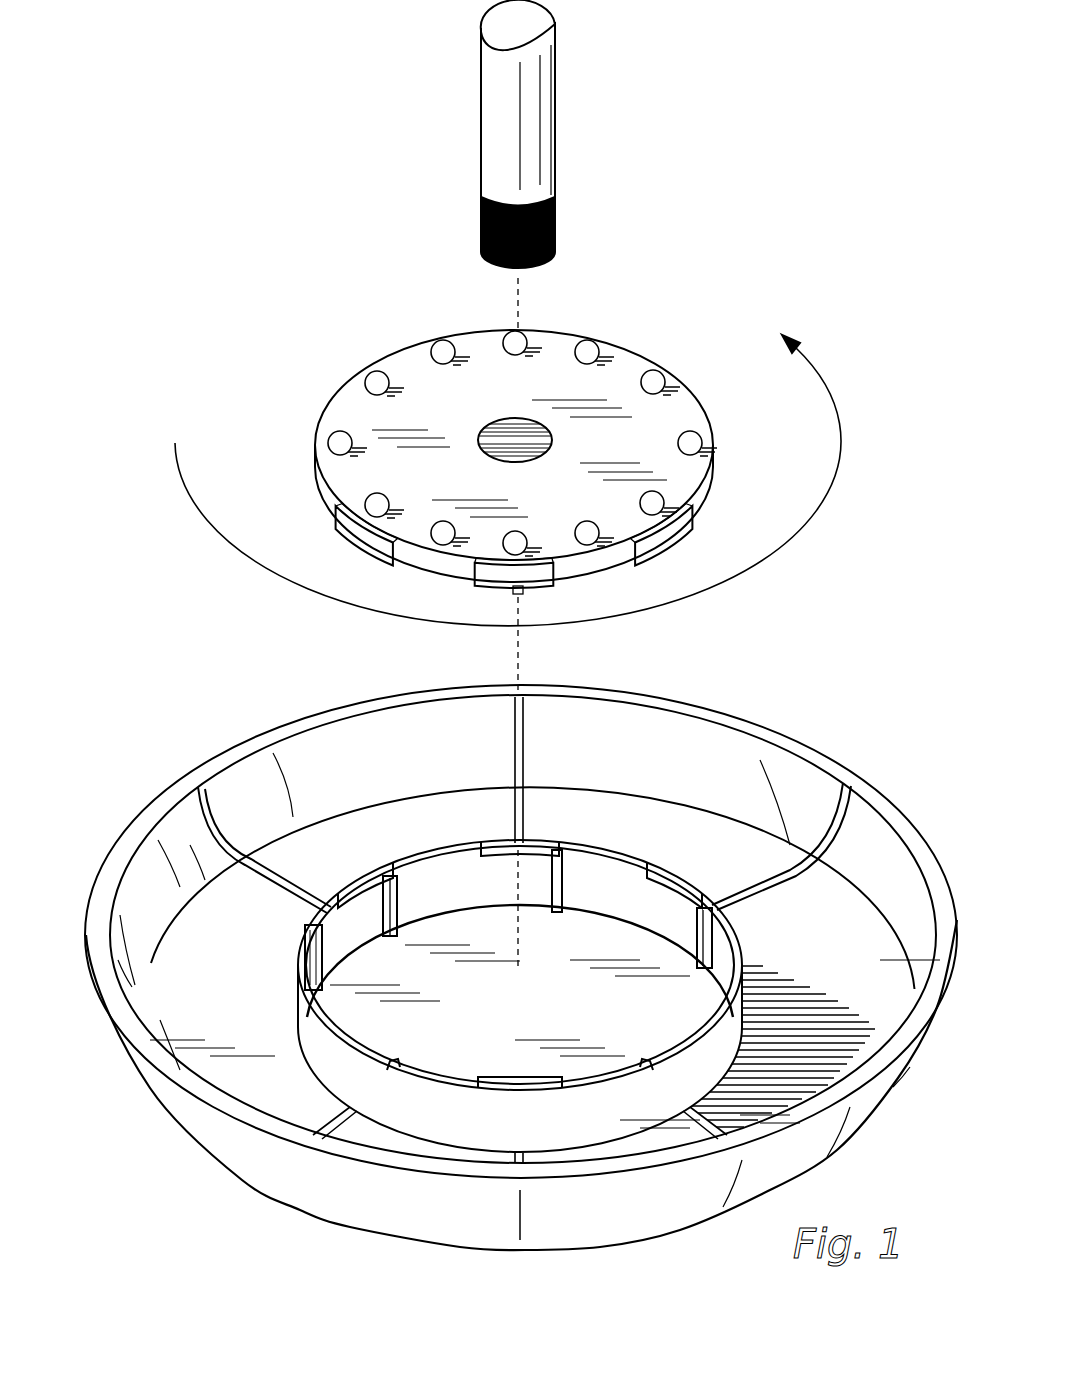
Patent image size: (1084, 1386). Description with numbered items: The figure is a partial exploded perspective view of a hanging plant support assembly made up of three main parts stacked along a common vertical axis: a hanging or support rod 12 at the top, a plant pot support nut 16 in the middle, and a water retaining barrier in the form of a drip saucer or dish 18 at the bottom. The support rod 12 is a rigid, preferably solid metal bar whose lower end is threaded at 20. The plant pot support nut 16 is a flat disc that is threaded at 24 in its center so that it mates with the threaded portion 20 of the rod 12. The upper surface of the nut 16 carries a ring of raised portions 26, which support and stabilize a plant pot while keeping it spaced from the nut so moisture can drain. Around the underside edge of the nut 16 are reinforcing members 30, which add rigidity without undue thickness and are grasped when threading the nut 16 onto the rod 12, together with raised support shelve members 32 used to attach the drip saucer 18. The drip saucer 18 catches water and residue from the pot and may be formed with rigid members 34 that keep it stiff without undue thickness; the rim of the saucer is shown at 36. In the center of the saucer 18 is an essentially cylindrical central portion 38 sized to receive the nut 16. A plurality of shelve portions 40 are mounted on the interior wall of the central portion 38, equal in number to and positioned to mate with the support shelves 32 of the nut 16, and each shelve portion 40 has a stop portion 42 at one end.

The support rod 12 is at (498, 86).
The threaded portion 20 is at (557, 221).
The plant pot support nut 16 is at (697, 420).
The threads 24 is at (512, 432).
The raised portions 26 is at (440, 350).
The support shelve members 32 is at (350, 538).
The reinforcing members 30 is at (512, 594).
The bowl rim 36 is at (770, 735).
The drip saucer 18 is at (521, 967).
The rigid members 34 is at (775, 885).
The central portion 38 is at (558, 982).
The shelve portions 40 is at (375, 880).
The stop portion 42 is at (400, 902).